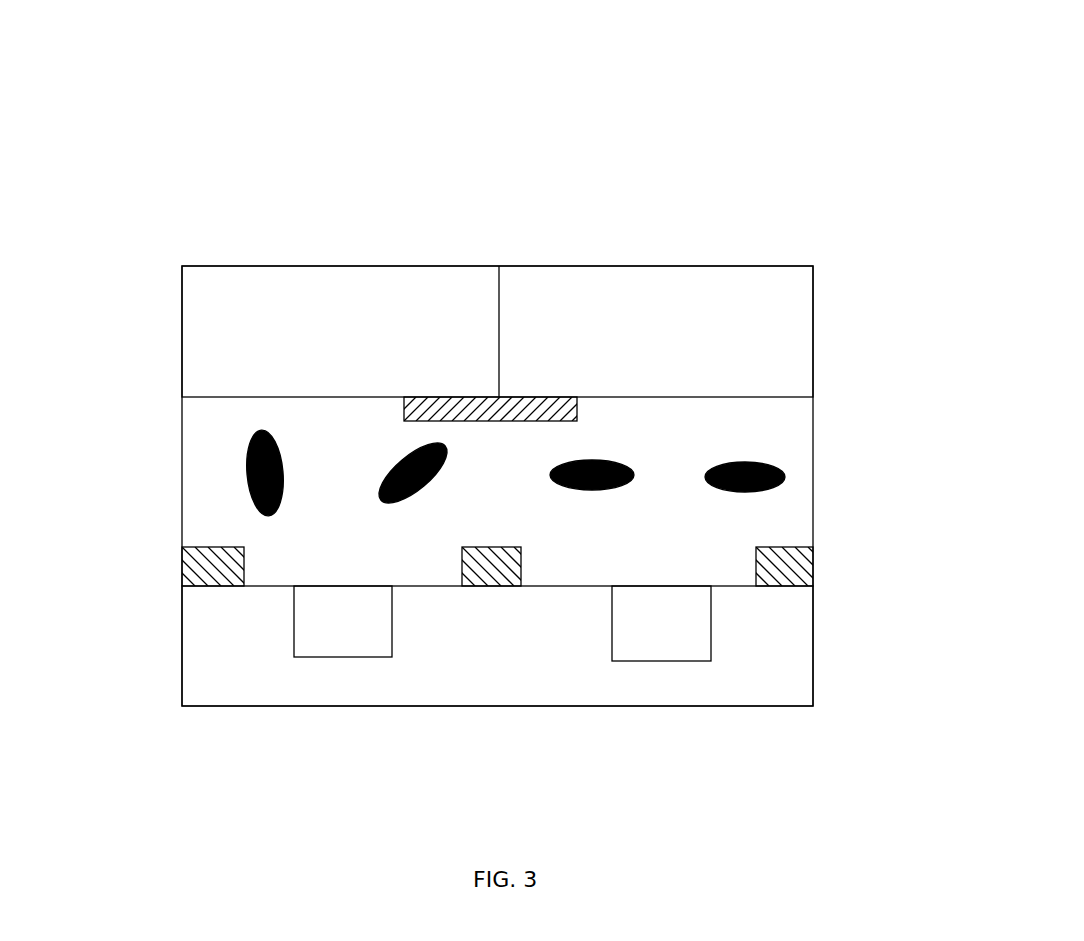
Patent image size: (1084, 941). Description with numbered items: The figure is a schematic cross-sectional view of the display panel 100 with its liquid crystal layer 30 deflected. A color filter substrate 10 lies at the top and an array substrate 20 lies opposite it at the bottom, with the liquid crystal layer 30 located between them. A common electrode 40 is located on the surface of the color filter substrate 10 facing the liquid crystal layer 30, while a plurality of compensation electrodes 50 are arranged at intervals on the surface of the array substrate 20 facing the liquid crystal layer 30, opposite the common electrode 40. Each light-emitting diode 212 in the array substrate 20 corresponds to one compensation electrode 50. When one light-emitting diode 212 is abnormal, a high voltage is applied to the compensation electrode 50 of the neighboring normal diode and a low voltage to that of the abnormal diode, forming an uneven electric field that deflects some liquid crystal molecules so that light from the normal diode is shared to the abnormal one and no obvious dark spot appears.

The display panel 100 is at (540, 44).
The color filter substrate 10 is at (677, 332).
The array substrate 20 is at (226, 667).
The liquid crystal layer 30 is at (219, 485).
The common electrode 40 is at (577, 408).
The compensation electrode 50 is at (205, 565).
The light-emitting diode 212 is at (350, 633).